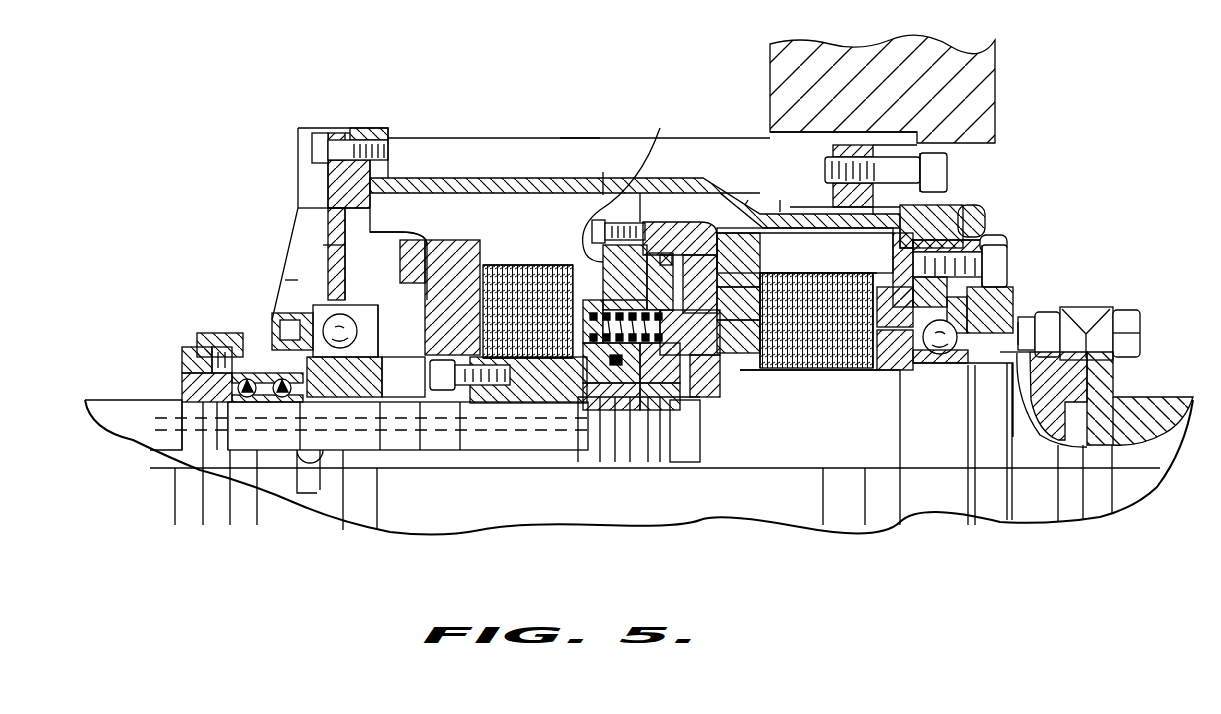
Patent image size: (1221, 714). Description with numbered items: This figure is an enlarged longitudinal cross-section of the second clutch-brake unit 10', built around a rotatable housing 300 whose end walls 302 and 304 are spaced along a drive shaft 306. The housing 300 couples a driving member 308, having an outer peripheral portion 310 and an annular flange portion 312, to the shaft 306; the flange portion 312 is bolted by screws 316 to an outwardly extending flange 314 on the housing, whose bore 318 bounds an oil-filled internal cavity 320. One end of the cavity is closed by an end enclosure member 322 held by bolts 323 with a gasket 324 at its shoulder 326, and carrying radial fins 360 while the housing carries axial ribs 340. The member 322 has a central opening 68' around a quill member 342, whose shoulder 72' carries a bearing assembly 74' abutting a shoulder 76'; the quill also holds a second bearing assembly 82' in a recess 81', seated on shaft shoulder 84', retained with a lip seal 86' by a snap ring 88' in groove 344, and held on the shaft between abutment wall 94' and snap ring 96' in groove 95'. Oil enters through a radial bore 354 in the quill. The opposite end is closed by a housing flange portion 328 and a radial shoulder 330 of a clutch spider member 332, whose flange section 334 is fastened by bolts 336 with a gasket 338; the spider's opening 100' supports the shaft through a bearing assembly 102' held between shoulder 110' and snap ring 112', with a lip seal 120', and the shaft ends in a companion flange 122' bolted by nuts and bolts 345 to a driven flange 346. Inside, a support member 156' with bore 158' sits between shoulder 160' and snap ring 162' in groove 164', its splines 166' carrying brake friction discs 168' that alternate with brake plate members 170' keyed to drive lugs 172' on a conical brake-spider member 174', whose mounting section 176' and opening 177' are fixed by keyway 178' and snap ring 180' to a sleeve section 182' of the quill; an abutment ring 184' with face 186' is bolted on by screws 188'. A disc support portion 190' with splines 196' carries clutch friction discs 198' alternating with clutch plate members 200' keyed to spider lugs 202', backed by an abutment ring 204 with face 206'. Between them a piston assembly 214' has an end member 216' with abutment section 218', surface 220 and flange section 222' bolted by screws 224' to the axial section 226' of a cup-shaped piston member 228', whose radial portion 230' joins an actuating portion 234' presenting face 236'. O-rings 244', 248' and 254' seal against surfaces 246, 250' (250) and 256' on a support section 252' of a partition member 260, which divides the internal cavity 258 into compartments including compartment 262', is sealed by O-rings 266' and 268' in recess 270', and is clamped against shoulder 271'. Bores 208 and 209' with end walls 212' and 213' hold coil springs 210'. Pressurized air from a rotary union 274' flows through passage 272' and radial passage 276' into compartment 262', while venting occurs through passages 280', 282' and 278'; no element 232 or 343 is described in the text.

The clutch-brake unit 10' is at (639, 479).
The central opening 68' is at (275, 319).
The annular axially extending shoulder 72' is at (327, 409).
The anti-friction bearing assembly 74' is at (347, 298).
The annular shoulder 76' is at (360, 303).
The annular recess 81' is at (264, 326).
The anti-friction bearing assembly 82' is at (267, 406).
The annular shoulder 84' is at (228, 489).
The lip seal 86' is at (178, 384).
The snap ring 88' is at (184, 356).
The abutment wall 94' is at (288, 489).
The annular groove 95' is at (175, 489).
The snap retaining ring 96' is at (230, 495).
The central opening 100' is at (916, 333).
The anti-friction bearing assembly 102' is at (940, 388).
The annular shoulder 110' is at (972, 311).
The annular snap ring 112' is at (921, 292).
The lip sealing means 120' is at (1044, 399).
The companion flange 122' is at (1084, 312).
The hub or support member 156' is at (488, 469).
The central bore 158' is at (513, 453).
The annular shoulder 160' is at (560, 453).
The snap retaining ring 162' is at (430, 450).
The annular groove 164' is at (535, 378).
The splined formations 166' is at (528, 327).
The friction discs 168' is at (528, 380).
The friction brake plate members 170' is at (491, 246).
The drive lugs 172' is at (479, 282).
The brake-spider member 174' is at (398, 254).
The annular mounting section 176' is at (435, 301).
The central opening 177' is at (400, 314).
The keyway 178' is at (375, 406).
The annular snap ring 180' is at (432, 324).
The sleeve-like support section 182' is at (357, 432).
The abutment ring 184' is at (467, 300).
The radially extending face 186' is at (465, 327).
The screws or bolts 188' is at (366, 377).
The disc support portion 190' is at (822, 423).
The splined-like formations 196' is at (808, 342).
The clutch friction discs 198' is at (805, 405).
The clutch plate members 200' is at (895, 275).
The drive lugs 202' is at (818, 248).
The abutment ring 204 is at (890, 375).
The abutment face 206' is at (808, 388).
The blind bores 208 is at (627, 296).
The blind bores 209' is at (674, 361).
The helical coil springs 210' is at (626, 326).
The annular end wall 212' is at (496, 393).
The annular end wall 213' is at (713, 284).
The annular piston assembly 214' is at (639, 188).
The end member 216' is at (620, 170).
The abutment section 218' is at (608, 391).
The abutment surface 220 is at (593, 310).
The flange section 222' is at (621, 218).
The screws or bolts 224' is at (670, 183).
The axially extending section 226' is at (740, 173).
The piston member 228' is at (742, 260).
The radially extending portion 230' is at (805, 240).
The seal 232 is at (700, 376).
The actuating portion 234' is at (742, 336).
The abutment face 236' is at (742, 306).
The O-ring sealing means 244' is at (715, 439).
The annular surface 246 is at (705, 452).
The O-ring sealing means 248' is at (605, 447).
The annular surface 250 is at (690, 332).
The annular surface 250' is at (613, 360).
The annular support section 252' is at (540, 474).
The O-ring sealing means 254' is at (590, 474).
The annular surface 256' is at (625, 492).
The internal cavity 258 is at (644, 429).
The partition member 260 is at (667, 281).
The compartment 262' is at (757, 189).
The O-ring sealing means 266' is at (680, 227).
The O-ring sealing means 268' is at (660, 489).
The annular recess 270' is at (705, 486).
The annular shoulder 271' is at (712, 484).
The central air passage 272' is at (355, 543).
The rotary union 274' is at (137, 409).
The radially outwardly extending passage 276' is at (715, 464).
The axially extending air passage 278' is at (371, 449).
The air passage 280' is at (653, 391).
The radially extending passage 282' is at (580, 498).
The rotatable housing 300 is at (572, 128).
The end wall 302 is at (285, 228).
The end wall 304 is at (1012, 228).
The rotatable drive shaft 306 is at (795, 458).
The driving member 308 is at (1020, 75).
The outer peripheral portion 310 is at (770, 60).
The annular flange portion 312 is at (947, 150).
The outwardly extending flange 314 is at (792, 192).
The screws or bolts 316 is at (947, 185).
The central axially extending bore 318 is at (527, 178).
The internal cavity 320 is at (800, 256).
The end enclosure member 322 is at (323, 245).
The screws or bolts 323 is at (312, 148).
The gasket means 324 is at (350, 130).
The radially extending shoulder 326 is at (398, 138).
The inwardly extending flange portion 328 is at (1008, 246).
The radial shoulder 330 is at (1013, 292).
The clutch spider member 332 is at (990, 444).
The flange section 334 is at (900, 200).
The screws or bolts 336 is at (1007, 270).
The gasket means 338 is at (985, 218).
The ribs or fins 340 is at (490, 158).
The quill member 342 is at (165, 332).
The body 343 is at (135, 442).
The groove 344 is at (927, 468).
The nuts and bolts 345 is at (1135, 317).
The complementing flange 346 is at (1112, 376).
The radially extending bore 354 is at (220, 333).
The fins or ribs 360 is at (295, 282).